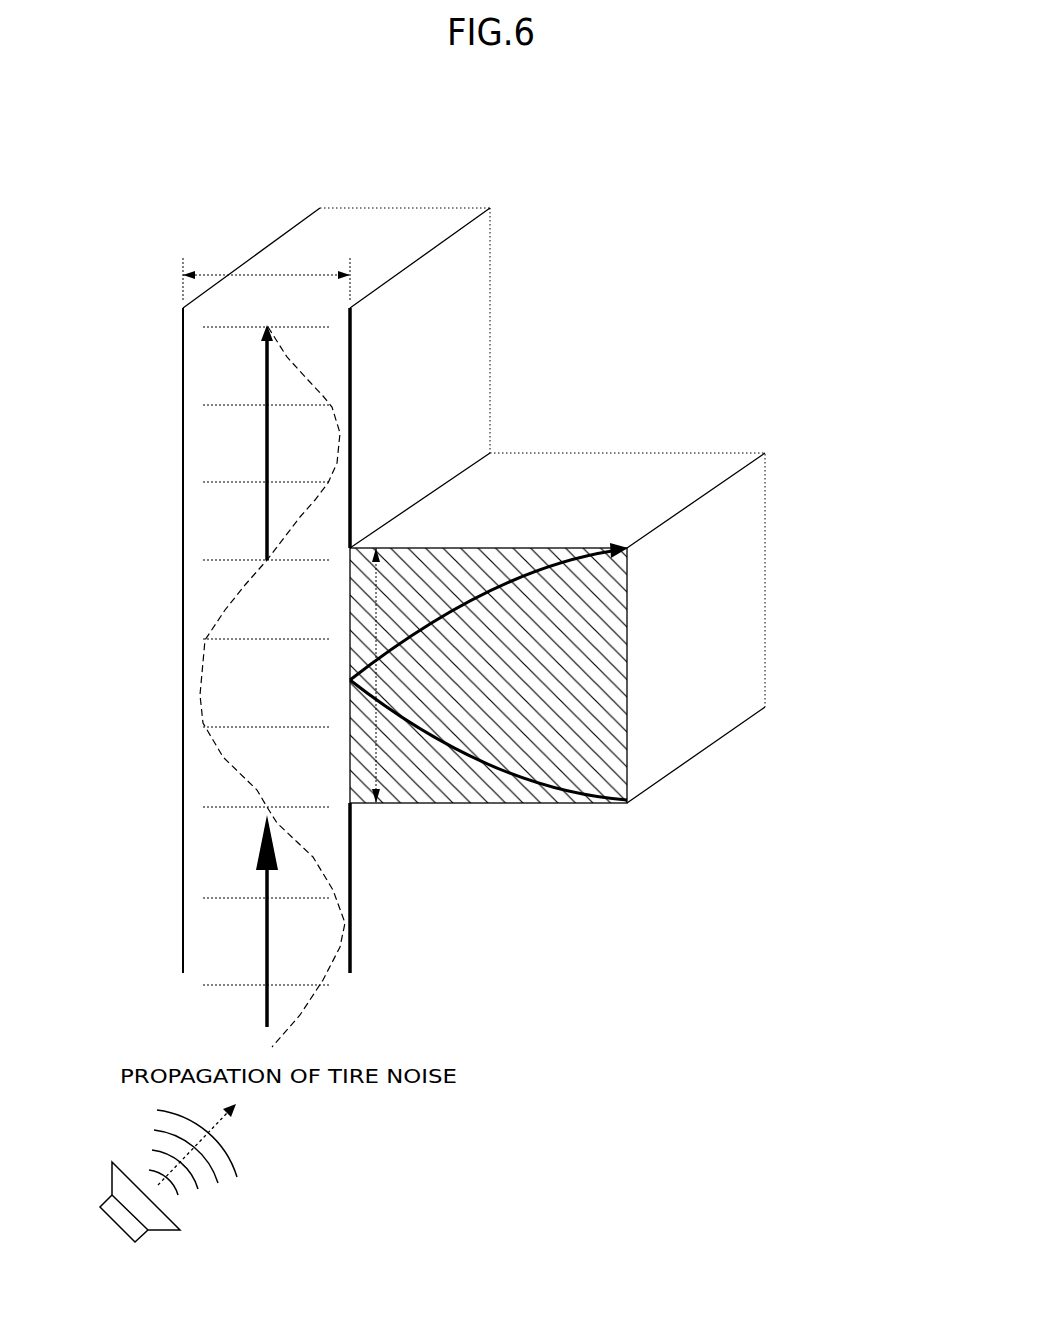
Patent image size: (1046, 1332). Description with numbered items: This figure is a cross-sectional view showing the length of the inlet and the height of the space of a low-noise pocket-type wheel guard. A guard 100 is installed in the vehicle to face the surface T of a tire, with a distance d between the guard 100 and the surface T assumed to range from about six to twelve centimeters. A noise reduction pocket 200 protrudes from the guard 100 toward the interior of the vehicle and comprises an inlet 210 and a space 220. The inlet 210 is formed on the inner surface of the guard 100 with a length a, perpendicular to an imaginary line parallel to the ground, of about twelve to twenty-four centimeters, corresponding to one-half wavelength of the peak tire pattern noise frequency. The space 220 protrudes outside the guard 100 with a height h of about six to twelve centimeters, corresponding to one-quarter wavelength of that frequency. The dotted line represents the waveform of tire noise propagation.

The surface of the tire T is at (183, 522).
The guard 100 is at (468, 350).
The noise reduction pocket 200 is at (862, 697).
The inlet 210 is at (352, 730).
The space 220 is at (692, 712).